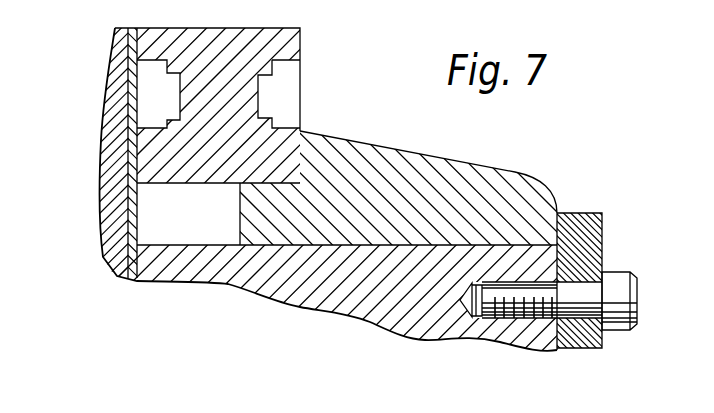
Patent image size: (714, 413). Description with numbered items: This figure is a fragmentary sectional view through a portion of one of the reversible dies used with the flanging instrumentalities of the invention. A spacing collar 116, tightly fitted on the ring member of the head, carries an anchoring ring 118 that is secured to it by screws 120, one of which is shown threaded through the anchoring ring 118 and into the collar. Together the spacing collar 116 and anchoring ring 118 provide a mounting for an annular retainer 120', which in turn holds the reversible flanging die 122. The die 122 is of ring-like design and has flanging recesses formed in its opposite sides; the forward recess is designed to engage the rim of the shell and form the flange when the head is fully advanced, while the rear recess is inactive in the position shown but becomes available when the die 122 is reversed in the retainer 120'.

The spacing collar 116 is at (424, 325).
The anchoring ring 118 is at (590, 240).
The screws 120 is at (571, 291).
The annular retainer 120' is at (394, 237).
The reversible flanging die 122 is at (240, 38).